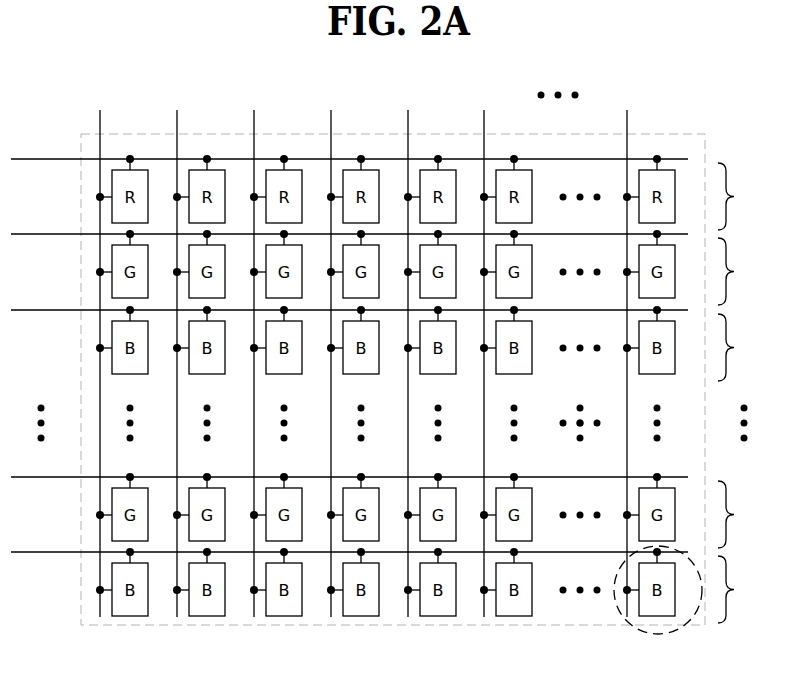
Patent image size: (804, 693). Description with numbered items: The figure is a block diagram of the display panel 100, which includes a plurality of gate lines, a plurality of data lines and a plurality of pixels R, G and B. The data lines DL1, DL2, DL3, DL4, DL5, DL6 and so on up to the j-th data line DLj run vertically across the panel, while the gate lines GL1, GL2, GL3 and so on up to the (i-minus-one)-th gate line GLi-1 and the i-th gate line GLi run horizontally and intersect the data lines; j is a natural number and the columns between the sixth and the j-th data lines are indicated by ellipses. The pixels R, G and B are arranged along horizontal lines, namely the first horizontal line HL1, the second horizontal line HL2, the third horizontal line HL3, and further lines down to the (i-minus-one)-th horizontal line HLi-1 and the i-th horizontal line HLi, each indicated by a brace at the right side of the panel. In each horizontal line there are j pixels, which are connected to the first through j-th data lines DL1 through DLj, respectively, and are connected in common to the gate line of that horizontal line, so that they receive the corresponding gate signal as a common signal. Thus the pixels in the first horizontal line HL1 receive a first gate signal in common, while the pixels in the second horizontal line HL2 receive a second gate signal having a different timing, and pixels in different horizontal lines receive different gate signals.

The display panel 100 is at (682, 134).
The first data line DL1 is at (102, 351).
The second data line DL2 is at (179, 351).
The third data line DL3 is at (256, 351).
The fourth data line DL4 is at (333, 351).
The fifth data line DL5 is at (410, 351).
The sixth data line DL6 is at (486, 351).
The j-th data line DLj is at (627, 351).
The first gate line GL1 is at (349, 149).
The second gate line GL2 is at (349, 224).
The third gate line GL3 is at (349, 300).
The (i-1)-th gate line GLi-1 is at (349, 466).
The i-th gate line GLi is at (349, 542).
The first horizontal line HL1 is at (434, 192).
The second horizontal line HL2 is at (434, 267).
The third horizontal line HL3 is at (434, 343).
The (i-1)-th horizontal line HLi-1 is at (444, 510).
The i-th horizontal line HLi is at (433, 590).